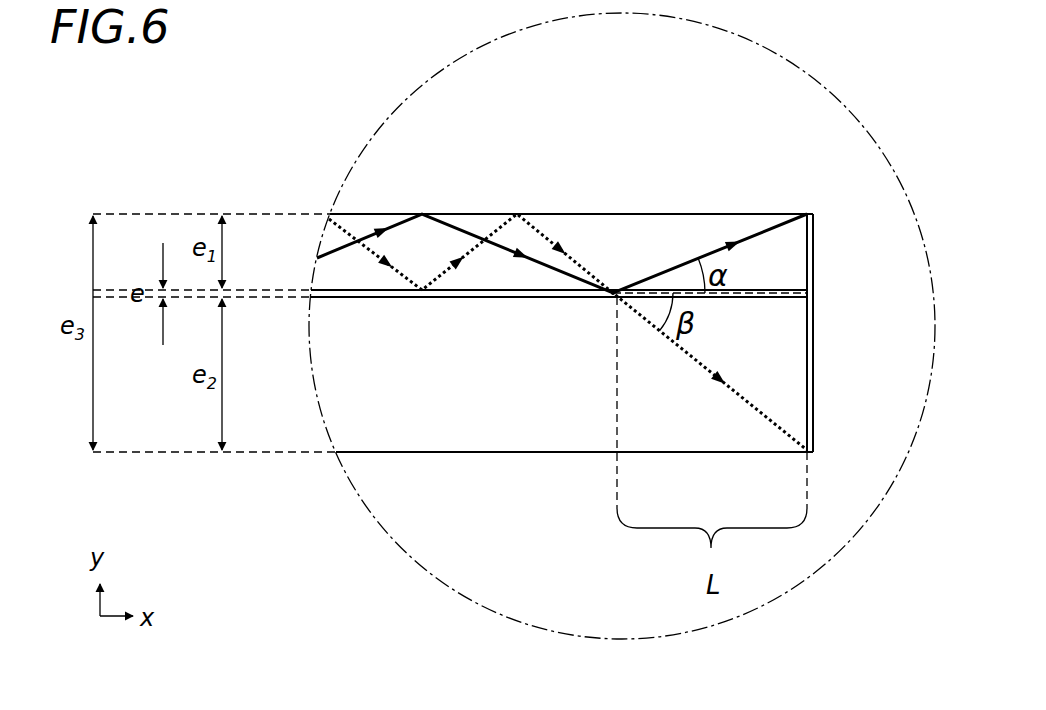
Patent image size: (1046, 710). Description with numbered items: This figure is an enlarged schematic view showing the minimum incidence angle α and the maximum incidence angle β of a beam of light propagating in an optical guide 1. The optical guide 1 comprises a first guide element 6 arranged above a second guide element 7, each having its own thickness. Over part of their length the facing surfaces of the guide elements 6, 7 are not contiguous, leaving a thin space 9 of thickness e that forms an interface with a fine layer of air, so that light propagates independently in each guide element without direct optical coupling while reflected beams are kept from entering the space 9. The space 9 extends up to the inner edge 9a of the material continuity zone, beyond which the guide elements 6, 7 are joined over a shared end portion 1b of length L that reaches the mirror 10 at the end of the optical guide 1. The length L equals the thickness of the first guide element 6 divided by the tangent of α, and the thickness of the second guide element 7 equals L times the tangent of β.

The optical guide 1 is at (608, 182).
The complementary portion (shared end portion) 1b is at (775, 348).
The first guide element 6 is at (430, 250).
The second guide element 7 is at (487, 418).
The thin space 9 is at (411, 300).
The inner edge 9a is at (609, 300).
The mirror 10 is at (817, 318).